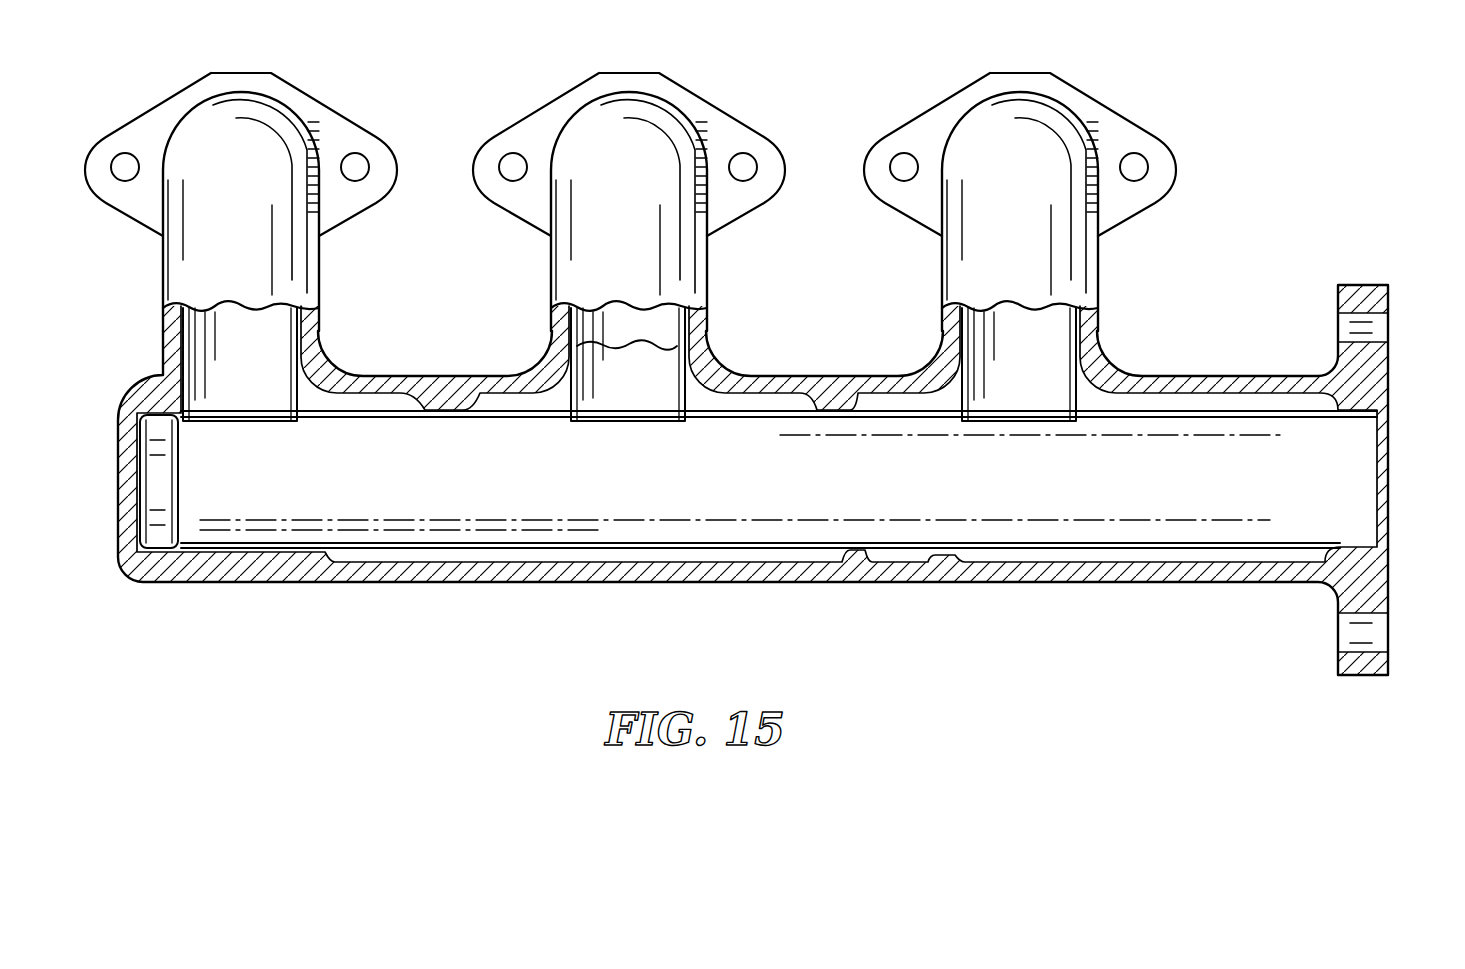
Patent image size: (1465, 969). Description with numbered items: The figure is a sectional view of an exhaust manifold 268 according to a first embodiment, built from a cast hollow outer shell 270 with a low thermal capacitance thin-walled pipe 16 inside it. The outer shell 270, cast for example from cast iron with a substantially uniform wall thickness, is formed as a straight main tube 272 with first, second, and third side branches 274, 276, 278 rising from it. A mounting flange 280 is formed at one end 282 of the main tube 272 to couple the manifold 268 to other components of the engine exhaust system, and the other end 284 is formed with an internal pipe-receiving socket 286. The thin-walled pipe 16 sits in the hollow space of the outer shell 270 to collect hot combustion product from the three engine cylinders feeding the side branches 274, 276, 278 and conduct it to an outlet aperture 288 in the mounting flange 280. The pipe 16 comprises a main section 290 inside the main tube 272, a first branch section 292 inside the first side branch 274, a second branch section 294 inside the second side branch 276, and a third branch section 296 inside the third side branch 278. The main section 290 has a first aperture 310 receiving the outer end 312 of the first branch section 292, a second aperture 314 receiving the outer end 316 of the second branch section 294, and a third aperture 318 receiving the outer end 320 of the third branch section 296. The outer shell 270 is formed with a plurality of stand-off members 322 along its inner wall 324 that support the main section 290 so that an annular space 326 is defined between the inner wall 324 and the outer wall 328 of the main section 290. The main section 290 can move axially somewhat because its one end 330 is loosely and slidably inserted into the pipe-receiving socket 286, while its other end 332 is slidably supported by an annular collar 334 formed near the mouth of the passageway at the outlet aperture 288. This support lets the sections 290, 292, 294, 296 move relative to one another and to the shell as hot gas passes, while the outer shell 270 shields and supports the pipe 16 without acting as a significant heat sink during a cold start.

The thin-walled pipe 16 is at (186, 350).
The manifold 268 is at (1213, 198).
The cast hollow outer shell 270 is at (128, 391).
The straight main tube 272 is at (556, 586).
The first side branch 274 is at (319, 324).
The second side branch 276 is at (708, 322).
The third side branch 278 is at (1099, 322).
The mounting flange 280 is at (1361, 677).
The end of main tube 282 is at (1291, 621).
The other end of main tube 284 is at (212, 599).
The pipe-receiving socket 286 is at (166, 496).
The outlet aperture 288 is at (1380, 547).
The main section 290 is at (1247, 548).
The first branch section 292 is at (315, 356).
The second branch section 294 is at (680, 390).
The third branch section 296 is at (1105, 364).
The first aperture 310 is at (203, 413).
The outer end of first side section 312 is at (284, 391).
The second aperture 314 is at (596, 423).
The outer end of second side section 316 is at (667, 395).
The third aperture 318 is at (985, 424).
The outer end of third side section 320 is at (1060, 388).
The stand-off members 322 is at (833, 398).
The inner wall 324 is at (943, 560).
The annular space 326 is at (518, 403).
The outer wall of main section 328 is at (903, 548).
The end of main section 330 is at (173, 543).
The other end of main section 332 is at (1287, 420).
The annular collar 334 is at (1350, 547).